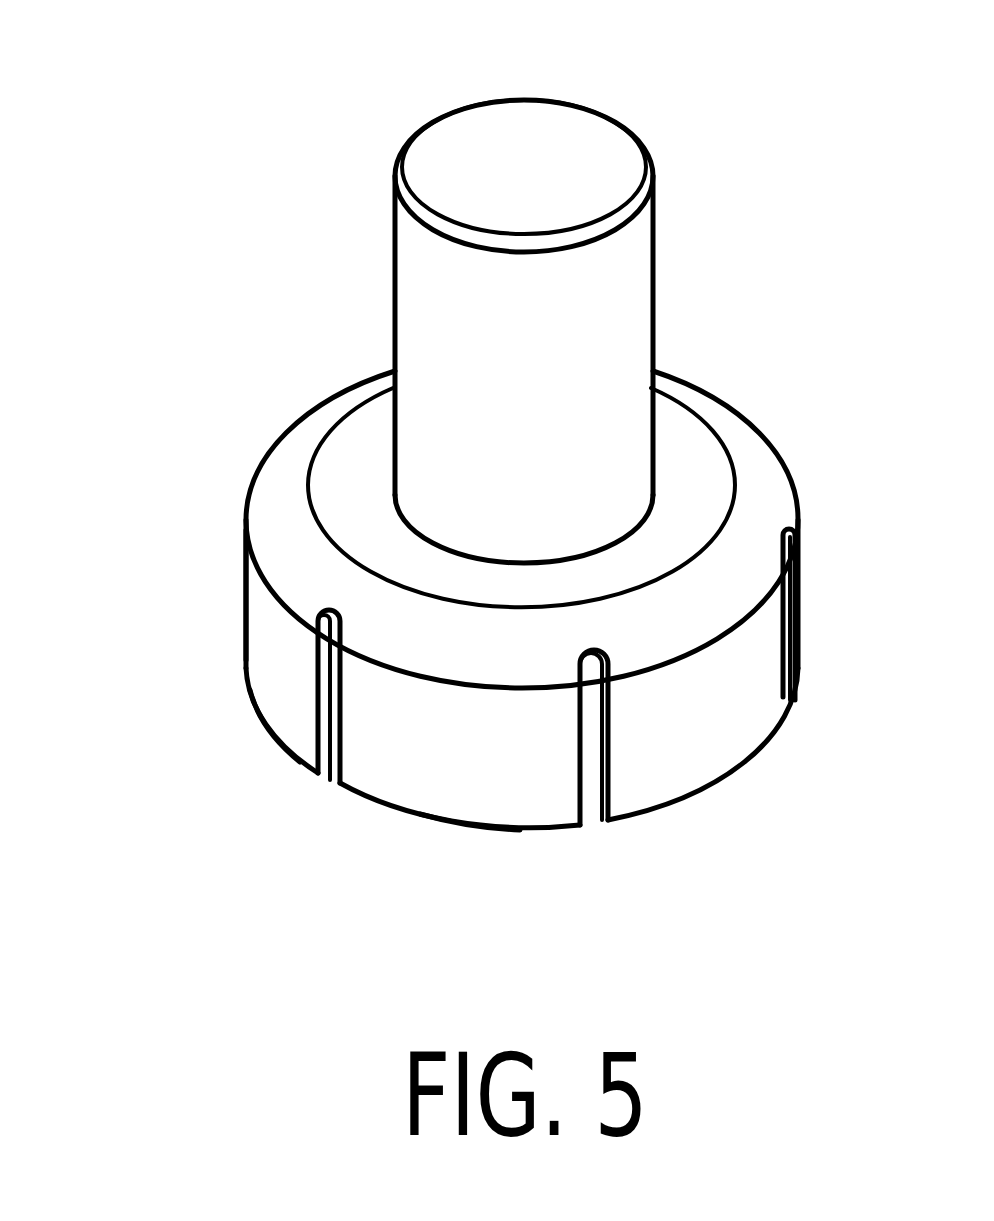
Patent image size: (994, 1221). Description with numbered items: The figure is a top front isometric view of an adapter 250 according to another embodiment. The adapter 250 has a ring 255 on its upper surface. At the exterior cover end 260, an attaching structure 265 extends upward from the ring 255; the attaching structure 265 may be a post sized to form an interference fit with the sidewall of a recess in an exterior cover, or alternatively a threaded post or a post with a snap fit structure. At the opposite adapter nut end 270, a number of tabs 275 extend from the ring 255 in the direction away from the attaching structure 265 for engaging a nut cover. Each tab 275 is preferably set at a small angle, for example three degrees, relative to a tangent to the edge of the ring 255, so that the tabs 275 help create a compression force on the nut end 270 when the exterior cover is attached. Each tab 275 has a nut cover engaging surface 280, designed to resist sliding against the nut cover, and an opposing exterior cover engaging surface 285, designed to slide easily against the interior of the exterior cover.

The adapter 250 is at (165, 568).
The ring 255 is at (347, 440).
The exterior cover end 260 is at (398, 160).
The attaching structure 265 is at (522, 130).
The adapter nut end 270 is at (242, 668).
The tab 275 is at (468, 792).
The nut cover engaging surface 280 is at (323, 778).
The exterior cover engaging surface 285 is at (265, 697).